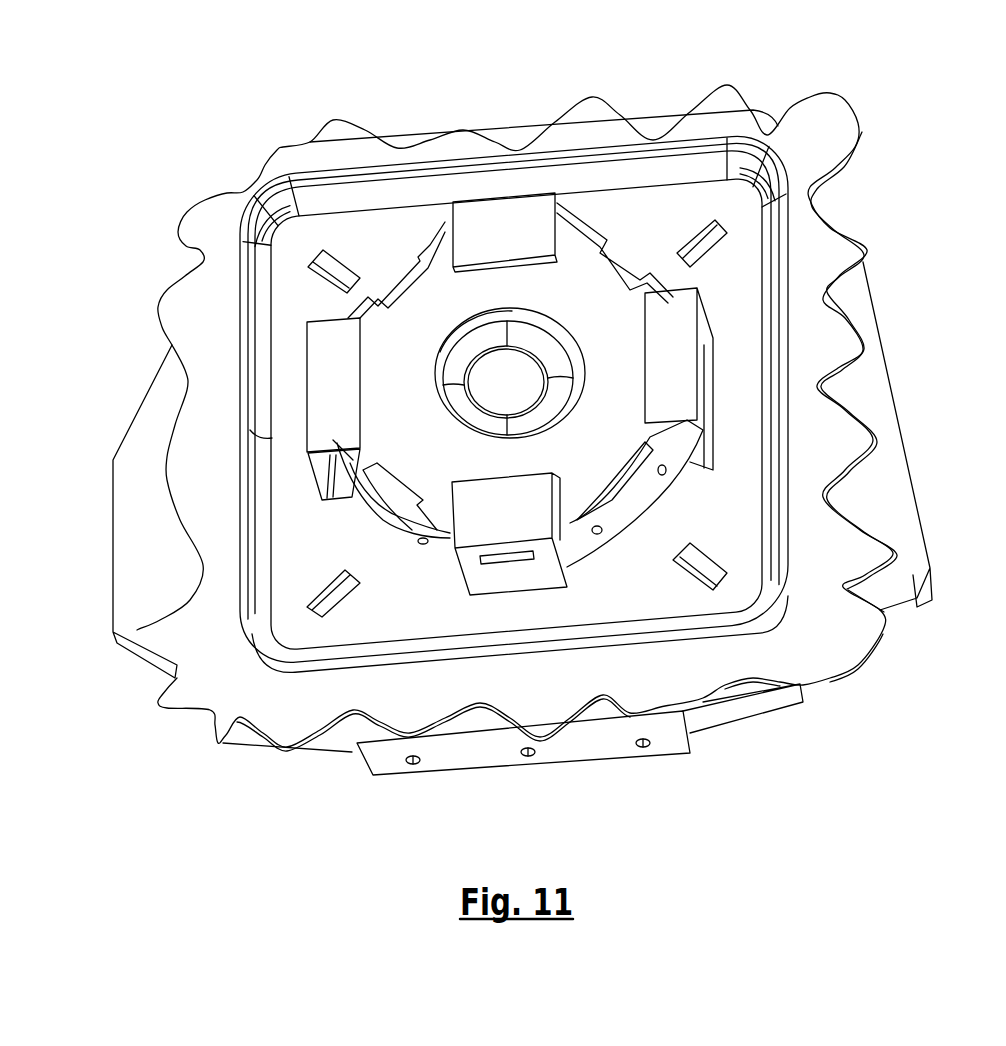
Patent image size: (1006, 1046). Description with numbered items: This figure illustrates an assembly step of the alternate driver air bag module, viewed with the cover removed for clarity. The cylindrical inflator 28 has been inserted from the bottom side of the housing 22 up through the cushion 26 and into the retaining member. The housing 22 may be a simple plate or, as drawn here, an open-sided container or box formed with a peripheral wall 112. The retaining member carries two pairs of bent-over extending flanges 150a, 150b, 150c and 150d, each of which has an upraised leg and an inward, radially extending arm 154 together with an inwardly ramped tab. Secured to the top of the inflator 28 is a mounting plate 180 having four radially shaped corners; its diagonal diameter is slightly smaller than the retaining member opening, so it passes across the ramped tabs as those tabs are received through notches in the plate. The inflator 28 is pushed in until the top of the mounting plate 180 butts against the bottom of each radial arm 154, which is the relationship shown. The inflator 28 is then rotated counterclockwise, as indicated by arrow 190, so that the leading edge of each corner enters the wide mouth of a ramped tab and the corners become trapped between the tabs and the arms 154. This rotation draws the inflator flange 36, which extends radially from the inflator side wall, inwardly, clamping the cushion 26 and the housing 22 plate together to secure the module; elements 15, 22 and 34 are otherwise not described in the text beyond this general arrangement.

The tab 15 is at (310, 478).
The housing 22 is at (343, 757).
The cushion 26 is at (840, 637).
The inflator 28 is at (541, 344).
The arcuate arm 34 is at (438, 563).
The radially extending flange 36 is at (634, 511).
The peripheral wall 112 is at (493, 752).
The extending flange 150a is at (503, 575).
The extending flange 150b is at (506, 221).
The extending flange 150c is at (676, 359).
The extending flange 150d is at (331, 379).
The radially extending arm 154 is at (350, 414).
The mounting plate 180 is at (630, 318).
The arrow 190 is at (510, 458).